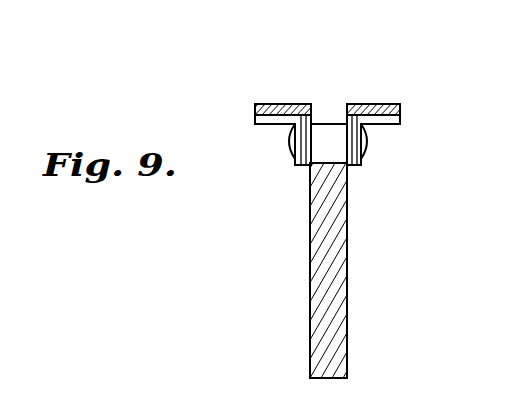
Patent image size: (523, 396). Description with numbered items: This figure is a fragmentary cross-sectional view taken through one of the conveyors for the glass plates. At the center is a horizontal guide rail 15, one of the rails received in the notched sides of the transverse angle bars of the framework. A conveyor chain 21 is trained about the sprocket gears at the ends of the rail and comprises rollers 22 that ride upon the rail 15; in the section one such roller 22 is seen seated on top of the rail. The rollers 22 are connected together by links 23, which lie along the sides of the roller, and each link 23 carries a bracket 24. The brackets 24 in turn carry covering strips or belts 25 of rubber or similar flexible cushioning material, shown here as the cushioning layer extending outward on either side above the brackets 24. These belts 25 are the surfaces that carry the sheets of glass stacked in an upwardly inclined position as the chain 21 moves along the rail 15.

The horizontal guide rail 15 is at (340, 312).
The conveyor chain 21 is at (331, 110).
The roller 22 is at (328, 148).
The link 23 is at (303, 168).
The bracket 24 is at (298, 123).
The covering strip or belt 25 is at (260, 106).